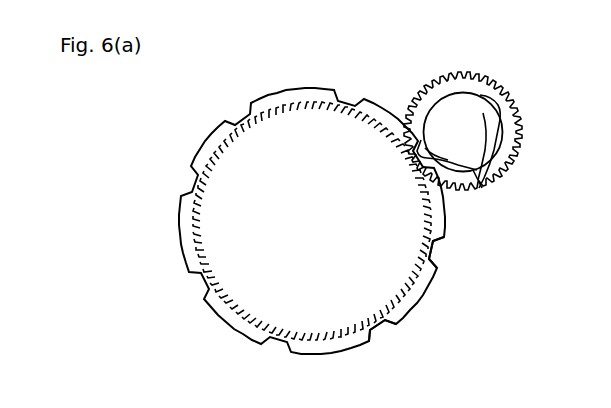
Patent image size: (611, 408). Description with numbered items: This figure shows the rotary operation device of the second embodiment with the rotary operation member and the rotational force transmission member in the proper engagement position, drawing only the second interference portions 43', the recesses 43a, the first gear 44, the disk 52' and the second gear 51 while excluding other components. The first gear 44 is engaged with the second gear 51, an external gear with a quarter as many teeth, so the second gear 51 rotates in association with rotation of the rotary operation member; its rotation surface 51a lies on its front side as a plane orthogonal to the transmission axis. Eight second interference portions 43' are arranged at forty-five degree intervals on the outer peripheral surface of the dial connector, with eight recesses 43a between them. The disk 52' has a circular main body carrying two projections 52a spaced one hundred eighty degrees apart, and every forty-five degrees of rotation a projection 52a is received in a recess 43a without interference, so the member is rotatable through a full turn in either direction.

The second interference portion 43' is at (312, 193).
The recess 43a is at (382, 324).
The first gear 44 is at (234, 108).
The second gear 51 is at (423, 78).
The rotation surface 51a is at (460, 91).
The disk 52' is at (510, 118).
The projection 52a is at (476, 180).